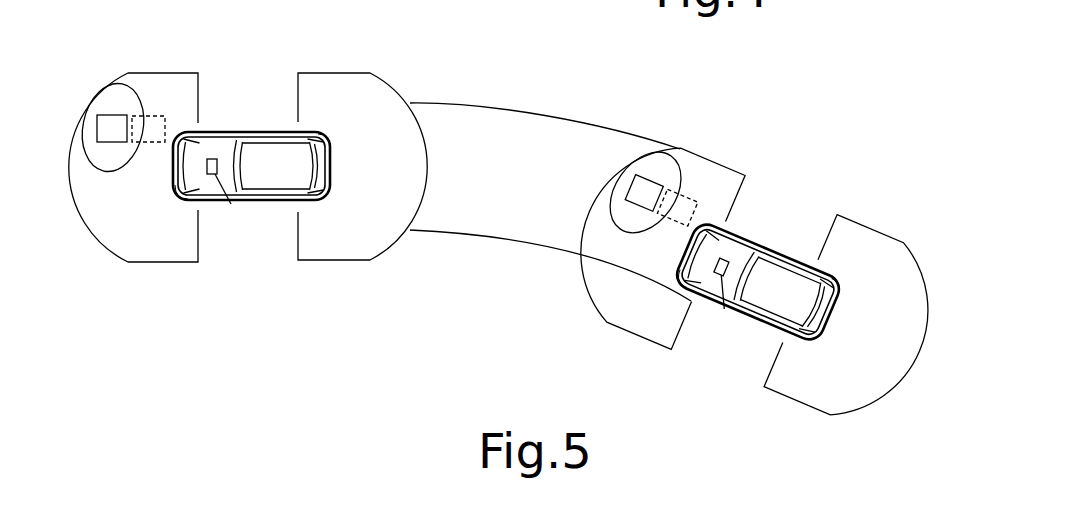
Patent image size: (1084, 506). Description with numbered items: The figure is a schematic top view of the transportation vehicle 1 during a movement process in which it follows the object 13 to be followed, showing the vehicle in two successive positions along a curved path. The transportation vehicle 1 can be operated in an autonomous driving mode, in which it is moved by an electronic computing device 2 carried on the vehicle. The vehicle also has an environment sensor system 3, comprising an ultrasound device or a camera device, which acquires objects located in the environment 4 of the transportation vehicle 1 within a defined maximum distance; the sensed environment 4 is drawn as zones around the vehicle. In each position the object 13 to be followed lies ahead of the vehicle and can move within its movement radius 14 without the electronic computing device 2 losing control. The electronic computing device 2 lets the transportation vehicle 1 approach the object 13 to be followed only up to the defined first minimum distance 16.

The transportation vehicle 1 is at (244, 202).
The electronic computing device 2 is at (211, 159).
The environment sensor system 3 is at (174, 201).
The environment 4 is at (170, 263).
The object to be followed 13 is at (117, 145).
The movement radius 14 is at (140, 108).
The first minimum distance 16 is at (168, 147).